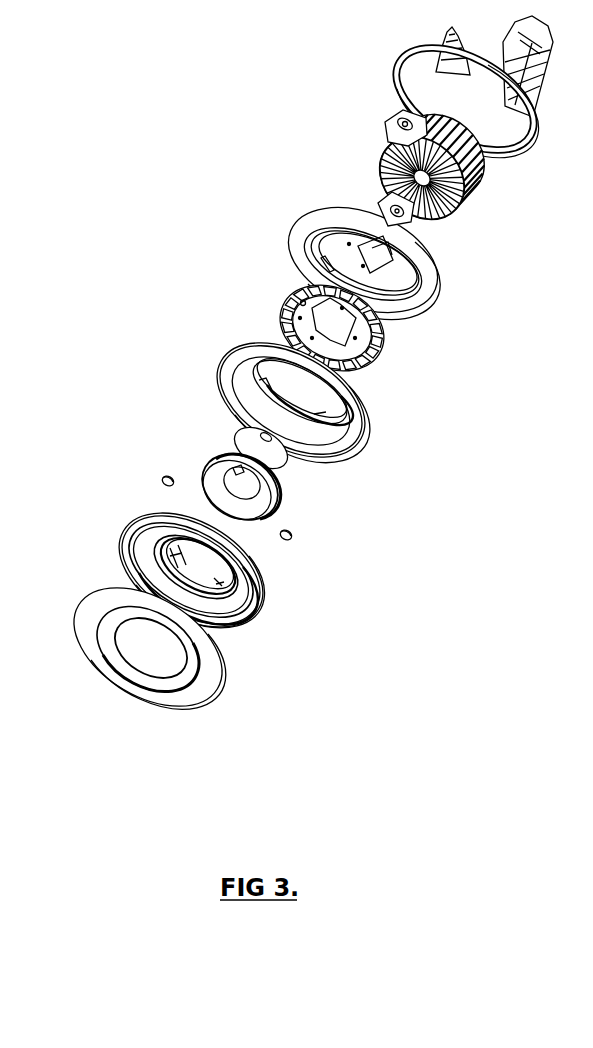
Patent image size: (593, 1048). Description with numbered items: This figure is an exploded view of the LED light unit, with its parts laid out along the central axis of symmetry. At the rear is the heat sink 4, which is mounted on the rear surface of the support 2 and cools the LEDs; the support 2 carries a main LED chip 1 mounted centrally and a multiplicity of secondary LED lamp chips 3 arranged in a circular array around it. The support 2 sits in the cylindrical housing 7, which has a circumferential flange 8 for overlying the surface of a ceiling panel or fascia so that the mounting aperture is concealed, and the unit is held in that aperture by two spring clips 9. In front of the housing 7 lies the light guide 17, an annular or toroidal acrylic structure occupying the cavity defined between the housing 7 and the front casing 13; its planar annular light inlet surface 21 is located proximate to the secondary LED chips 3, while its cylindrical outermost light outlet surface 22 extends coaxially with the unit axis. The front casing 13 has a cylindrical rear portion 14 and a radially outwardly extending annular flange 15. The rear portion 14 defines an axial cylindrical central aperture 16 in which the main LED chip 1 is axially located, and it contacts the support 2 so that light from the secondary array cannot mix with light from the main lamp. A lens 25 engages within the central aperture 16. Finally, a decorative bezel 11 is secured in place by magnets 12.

The main LED chip 1 is at (436, 209).
The support 2 is at (280, 284).
The secondary LED lamp chips 3 is at (376, 364).
The heat sink 4 is at (467, 213).
The housing 7 is at (393, 284).
The circumferential flange 8 is at (392, 304).
The spring clips 9 is at (421, 89).
The decorative bezel 11 is at (188, 678).
The magnets 12 is at (346, 583).
The front casing 13 is at (233, 591).
The cylindrical rear portion 14 is at (137, 547).
The annular flange 15 is at (226, 600).
The central aperture 16 is at (135, 527).
The light guide 17 is at (355, 438).
The light inlet surface 21 is at (329, 453).
The light outlet surface 22 is at (252, 373).
The lens 25 is at (199, 449).